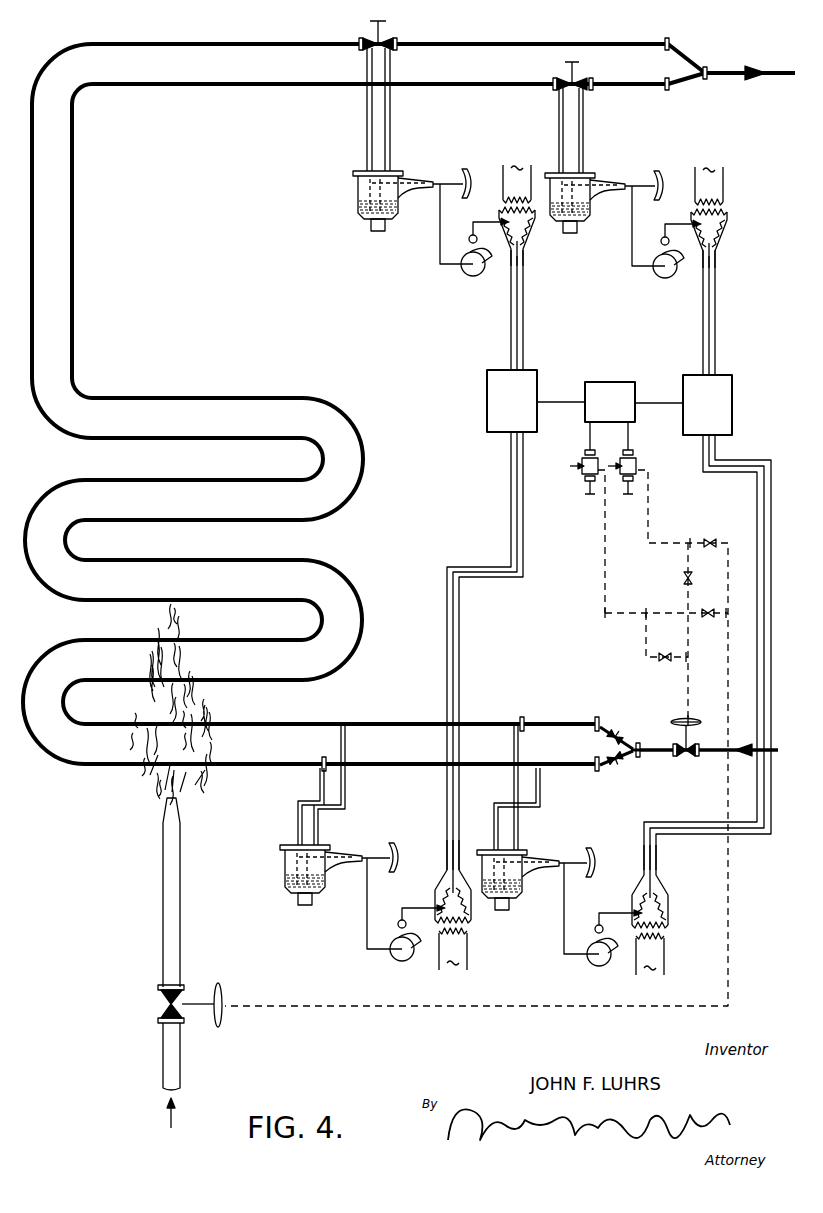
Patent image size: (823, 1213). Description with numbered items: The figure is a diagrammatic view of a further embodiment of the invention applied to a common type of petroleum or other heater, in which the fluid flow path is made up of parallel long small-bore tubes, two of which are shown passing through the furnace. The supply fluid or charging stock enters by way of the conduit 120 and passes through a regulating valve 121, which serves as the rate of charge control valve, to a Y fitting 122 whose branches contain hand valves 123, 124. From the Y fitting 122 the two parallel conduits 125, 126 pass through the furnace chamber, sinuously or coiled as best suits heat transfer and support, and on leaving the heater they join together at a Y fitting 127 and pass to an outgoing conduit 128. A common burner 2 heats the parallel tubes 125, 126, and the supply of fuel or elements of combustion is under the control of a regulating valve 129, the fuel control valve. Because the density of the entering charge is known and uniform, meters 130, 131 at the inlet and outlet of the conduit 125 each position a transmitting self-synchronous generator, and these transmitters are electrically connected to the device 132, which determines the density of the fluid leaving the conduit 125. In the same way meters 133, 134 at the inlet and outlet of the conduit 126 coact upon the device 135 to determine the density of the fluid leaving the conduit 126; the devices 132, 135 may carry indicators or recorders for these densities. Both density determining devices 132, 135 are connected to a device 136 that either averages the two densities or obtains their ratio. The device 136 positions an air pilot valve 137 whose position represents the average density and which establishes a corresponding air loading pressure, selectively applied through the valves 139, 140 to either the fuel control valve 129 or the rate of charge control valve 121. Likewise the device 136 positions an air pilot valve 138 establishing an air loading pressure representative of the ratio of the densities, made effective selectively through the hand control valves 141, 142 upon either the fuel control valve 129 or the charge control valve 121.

The burner 2 is at (163, 908).
The conduit 120 is at (717, 755).
The regulating valve 121 is at (681, 756).
The Y fitting 122 is at (630, 756).
The hand valve 123 is at (613, 768).
The hand valve 124 is at (619, 729).
The conduit 125 is at (411, 768).
The conduit 126 is at (408, 722).
The Y fitting 127 is at (681, 56).
The outgoing conduit 128 is at (738, 68).
The regulating valve 129 is at (160, 1005).
The meter 130 is at (297, 905).
The meter 131 is at (371, 232).
The device 132 is at (487, 382).
The meter 133 is at (506, 914).
The meter 134 is at (574, 236).
The device 135 is at (732, 378).
The device 136 is at (600, 382).
The air pilot valve 137 is at (580, 462).
The air pilot valve 138 is at (640, 465).
The valve 139 is at (666, 662).
The valve 140 is at (701, 612).
The hand control valve 141 is at (684, 579).
The hand control valve 142 is at (708, 540).